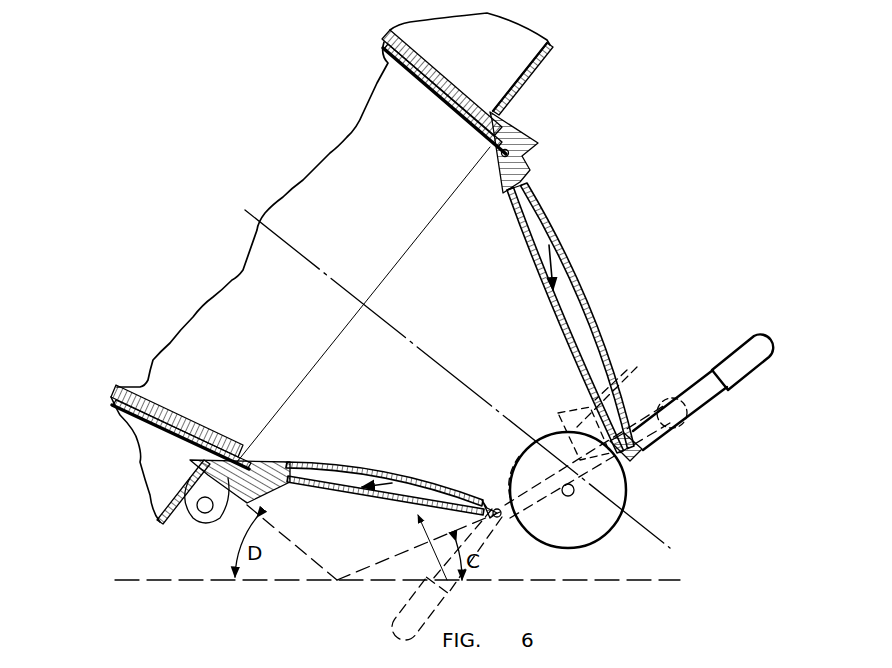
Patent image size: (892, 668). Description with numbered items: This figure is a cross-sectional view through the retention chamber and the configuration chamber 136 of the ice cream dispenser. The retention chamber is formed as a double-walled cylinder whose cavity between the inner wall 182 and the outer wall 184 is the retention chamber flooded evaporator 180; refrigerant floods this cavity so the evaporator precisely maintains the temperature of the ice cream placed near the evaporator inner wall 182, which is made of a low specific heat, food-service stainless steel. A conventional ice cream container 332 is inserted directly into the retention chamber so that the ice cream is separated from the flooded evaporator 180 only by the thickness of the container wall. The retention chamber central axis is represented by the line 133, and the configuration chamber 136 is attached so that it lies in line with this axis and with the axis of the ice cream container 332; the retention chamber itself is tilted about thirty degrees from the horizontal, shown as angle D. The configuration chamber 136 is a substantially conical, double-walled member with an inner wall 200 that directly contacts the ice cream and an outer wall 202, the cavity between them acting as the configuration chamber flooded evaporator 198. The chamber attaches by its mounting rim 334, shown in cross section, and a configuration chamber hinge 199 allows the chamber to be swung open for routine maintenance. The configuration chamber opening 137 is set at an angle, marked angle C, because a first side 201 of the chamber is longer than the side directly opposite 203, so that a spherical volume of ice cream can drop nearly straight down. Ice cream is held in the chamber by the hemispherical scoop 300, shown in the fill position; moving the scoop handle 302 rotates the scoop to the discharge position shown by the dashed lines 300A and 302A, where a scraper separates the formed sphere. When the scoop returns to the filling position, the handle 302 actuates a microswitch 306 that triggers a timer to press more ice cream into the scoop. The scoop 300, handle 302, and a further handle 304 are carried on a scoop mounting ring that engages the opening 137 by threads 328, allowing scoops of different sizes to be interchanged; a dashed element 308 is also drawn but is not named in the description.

The retention chamber central axis 133 is at (383, 313).
The configuration chamber 136 is at (524, 389).
The configuration chamber opening 137 is at (537, 467).
The retention chamber flooded evaporator 180 is at (425, 70).
The retention chamber flooded evaporator inner wall 182 is at (430, 90).
The retention chamber flooded evaporator outer wall 184 is at (450, 80).
The configuration chamber flooded evaporator 198 is at (483, 355).
The configuration chamber hinge 199 is at (205, 517).
The inner wall 200 is at (550, 317).
The first side 201 is at (577, 278).
The outer wall 202 is at (585, 323).
The side directly opposite 203 is at (407, 533).
The scoop 300 is at (602, 531).
The scoop discharge position 300A is at (510, 497).
The scoop handle 302 is at (697, 408).
The handle discharge position 302A is at (450, 587).
The handle 304 is at (677, 433).
The microswitch 306 is at (617, 380).
The latch block 308 is at (573, 420).
The threads 328 is at (635, 467).
The ice cream container 332 is at (462, 130).
The configuration chamber mounting rim 334 is at (533, 133).